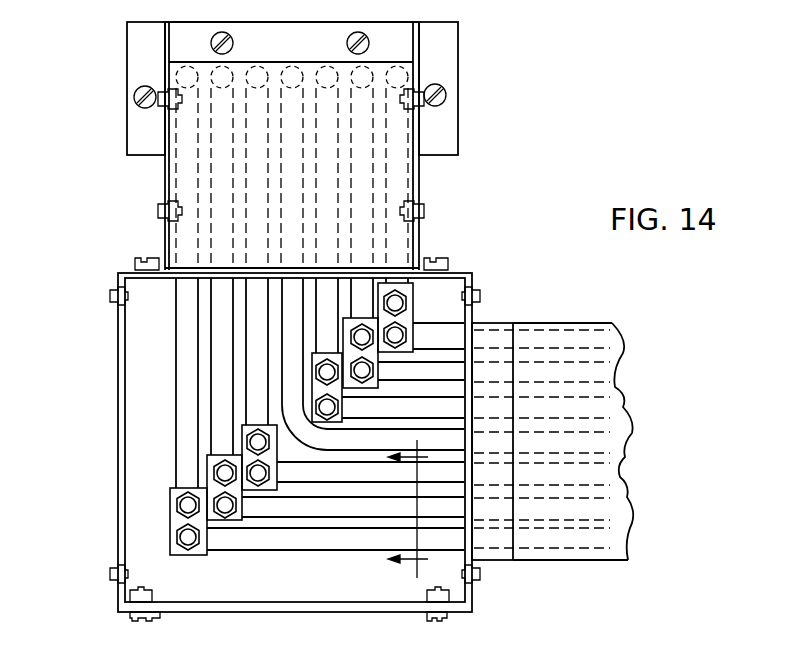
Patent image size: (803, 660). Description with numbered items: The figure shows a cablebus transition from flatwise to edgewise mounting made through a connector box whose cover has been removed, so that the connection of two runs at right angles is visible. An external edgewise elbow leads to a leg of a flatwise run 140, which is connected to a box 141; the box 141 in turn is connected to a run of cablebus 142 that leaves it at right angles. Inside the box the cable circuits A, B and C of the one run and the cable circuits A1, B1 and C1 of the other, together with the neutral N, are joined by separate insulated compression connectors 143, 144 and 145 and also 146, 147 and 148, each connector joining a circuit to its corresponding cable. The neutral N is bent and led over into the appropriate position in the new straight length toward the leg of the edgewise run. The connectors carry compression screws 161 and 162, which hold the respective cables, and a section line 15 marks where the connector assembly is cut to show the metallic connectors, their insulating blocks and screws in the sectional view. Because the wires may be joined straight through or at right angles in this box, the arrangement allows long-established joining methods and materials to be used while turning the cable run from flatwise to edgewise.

The flatwise run 140 is at (135, 127).
The box 141 is at (140, 270).
The run of cablebus 142 is at (552, 340).
The insulated compression connector 143 is at (182, 340).
The insulated compression connector 144 is at (227, 395).
The insulated compression connector 145 is at (258, 328).
The insulated compression connector 146 is at (355, 407).
The insulated compression connector 147 is at (445, 366).
The insulated compression connector 148 is at (437, 334).
The compression screw 161 is at (401, 333).
The compression screw 162 is at (397, 300).
The section line 15 is at (407, 510).
The neutral N is at (289, 66).
The cable circuit A is at (188, 158).
The cable circuit B is at (225, 183).
The cable circuit C is at (250, 107).
The cable circuit A1 is at (326, 68).
The cable circuit B1 is at (353, 68).
The cable circuit C1 is at (396, 68).